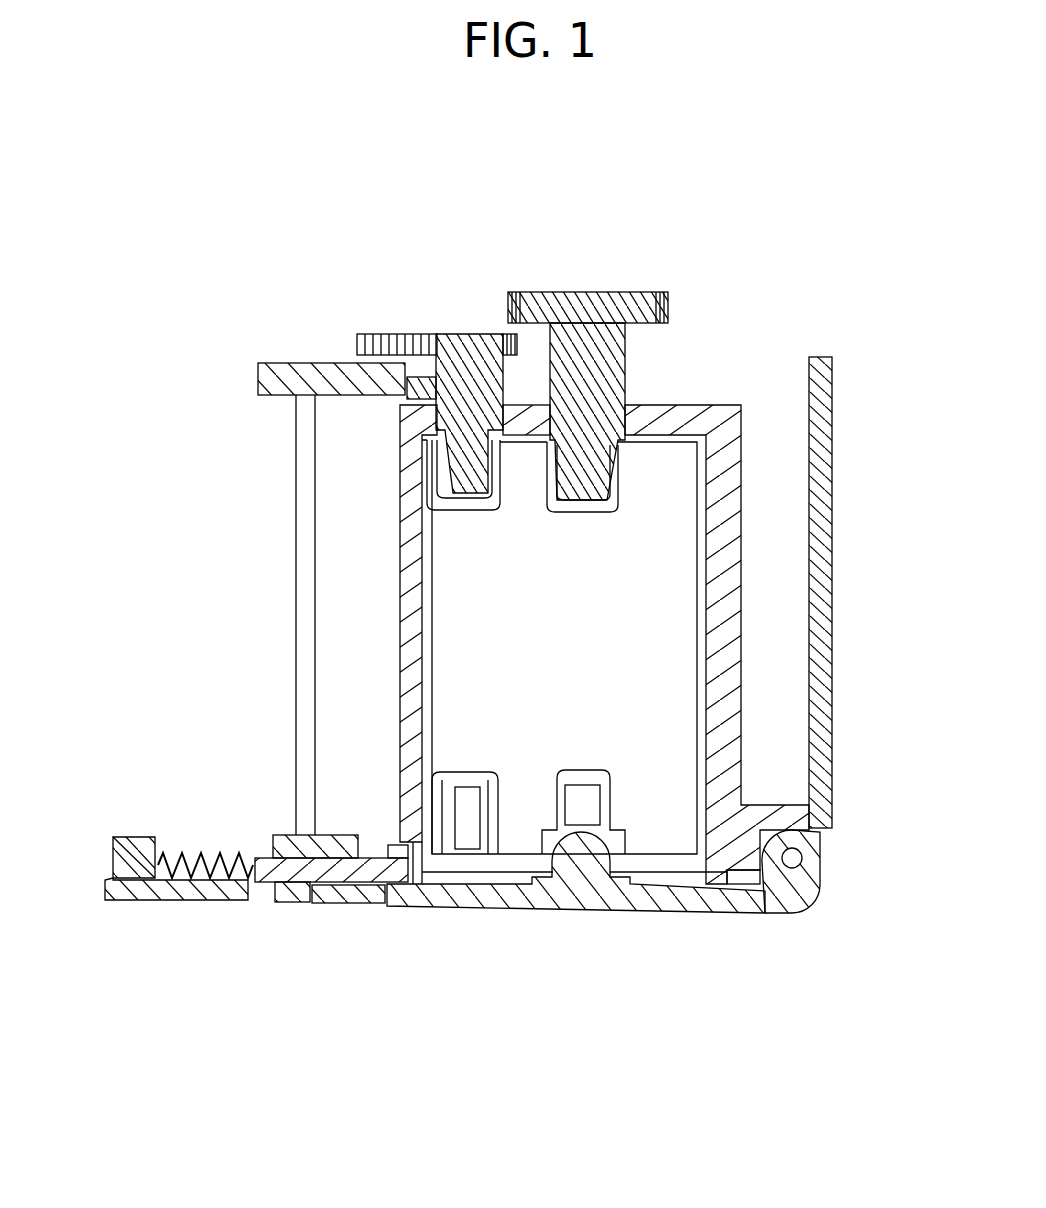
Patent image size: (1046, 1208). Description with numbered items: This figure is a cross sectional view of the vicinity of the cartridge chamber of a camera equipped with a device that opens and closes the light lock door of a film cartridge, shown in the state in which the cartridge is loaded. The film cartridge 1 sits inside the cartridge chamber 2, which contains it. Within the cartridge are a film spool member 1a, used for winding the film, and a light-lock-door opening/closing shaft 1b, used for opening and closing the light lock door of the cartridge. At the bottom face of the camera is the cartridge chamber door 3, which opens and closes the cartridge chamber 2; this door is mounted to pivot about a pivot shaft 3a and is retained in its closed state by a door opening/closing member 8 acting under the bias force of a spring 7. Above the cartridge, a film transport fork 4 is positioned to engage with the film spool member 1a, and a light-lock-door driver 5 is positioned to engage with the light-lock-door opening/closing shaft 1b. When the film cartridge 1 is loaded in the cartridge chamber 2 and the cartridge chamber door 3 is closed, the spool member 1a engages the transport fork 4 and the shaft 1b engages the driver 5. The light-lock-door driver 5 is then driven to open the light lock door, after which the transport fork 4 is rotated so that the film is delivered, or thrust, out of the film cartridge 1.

The film cartridge 1 is at (665, 712).
The film spool member 1a is at (612, 470).
The light-lock-door opening/closing shaft 1b is at (447, 485).
The cartridge chamber 2 is at (692, 876).
The cartridge chamber door 3 is at (665, 903).
The pivot shaft 3a is at (798, 868).
The film transport fork 4 is at (630, 298).
The light-lock-door driver 5 is at (460, 334).
The spring 7 is at (217, 857).
The door opening/closing member 8 is at (293, 902).